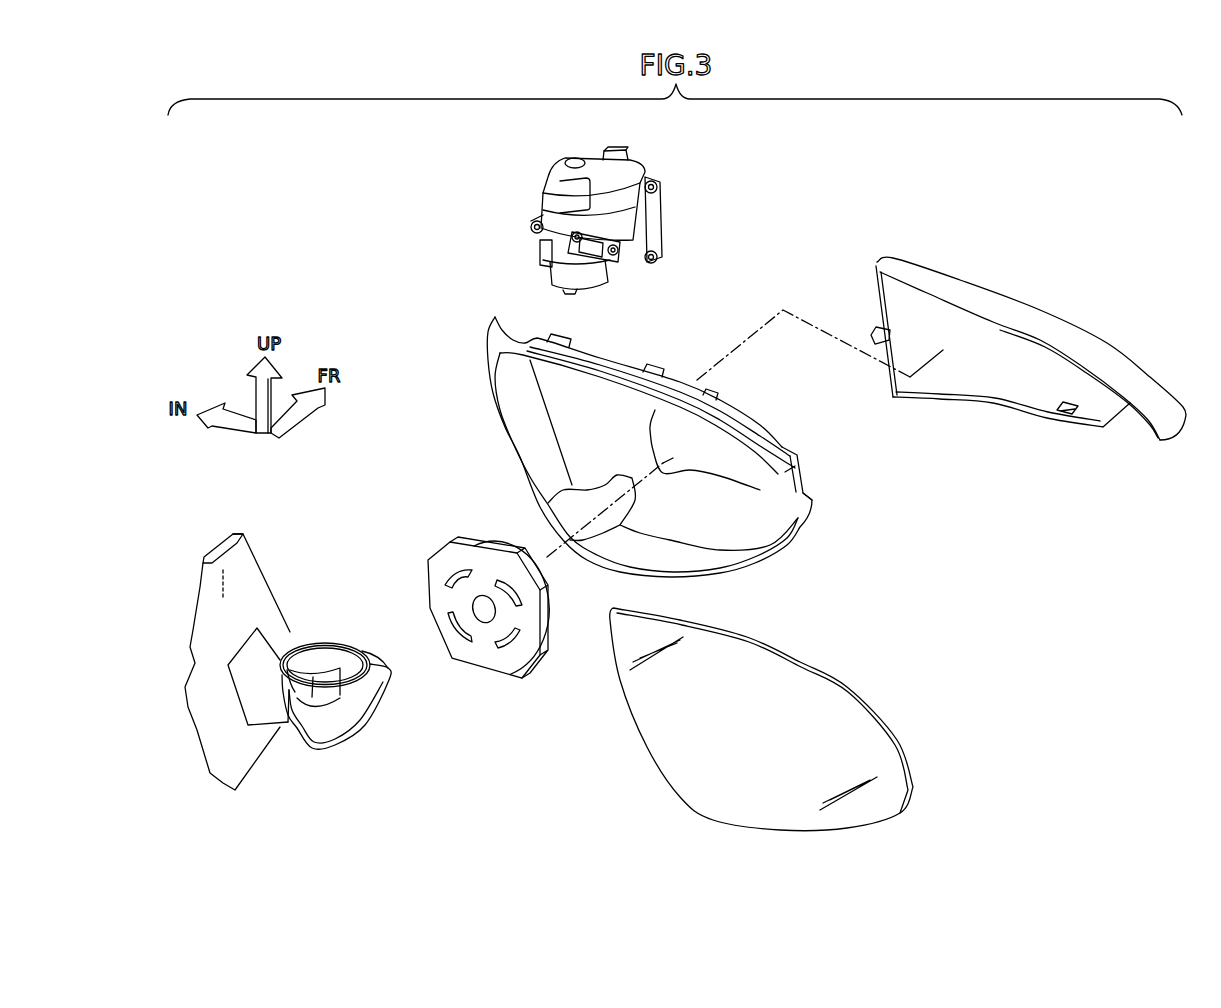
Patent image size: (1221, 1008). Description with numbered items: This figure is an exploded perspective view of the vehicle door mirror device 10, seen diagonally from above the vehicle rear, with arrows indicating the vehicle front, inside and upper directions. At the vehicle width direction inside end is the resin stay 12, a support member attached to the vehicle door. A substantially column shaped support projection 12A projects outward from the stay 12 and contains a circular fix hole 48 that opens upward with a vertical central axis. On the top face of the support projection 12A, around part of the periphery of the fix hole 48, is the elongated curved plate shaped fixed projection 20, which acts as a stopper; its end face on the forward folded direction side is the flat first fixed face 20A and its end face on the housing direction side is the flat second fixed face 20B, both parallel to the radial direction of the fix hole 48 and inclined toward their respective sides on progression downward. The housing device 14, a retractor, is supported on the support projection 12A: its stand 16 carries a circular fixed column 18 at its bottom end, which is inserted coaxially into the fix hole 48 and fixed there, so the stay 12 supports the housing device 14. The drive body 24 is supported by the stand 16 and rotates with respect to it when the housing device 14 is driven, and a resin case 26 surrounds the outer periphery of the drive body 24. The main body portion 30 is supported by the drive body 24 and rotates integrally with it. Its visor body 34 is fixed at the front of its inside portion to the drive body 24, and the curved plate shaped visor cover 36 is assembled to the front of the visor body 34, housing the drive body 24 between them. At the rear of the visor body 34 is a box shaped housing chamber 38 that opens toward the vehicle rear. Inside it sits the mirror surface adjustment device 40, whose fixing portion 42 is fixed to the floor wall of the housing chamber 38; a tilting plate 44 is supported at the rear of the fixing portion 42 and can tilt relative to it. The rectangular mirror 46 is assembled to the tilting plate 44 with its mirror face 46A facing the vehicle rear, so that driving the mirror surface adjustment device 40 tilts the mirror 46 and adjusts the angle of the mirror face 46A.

The vehicle door mirror device 10 is at (406, 262).
The stay 12 is at (308, 648).
The support projection 12A is at (323, 643).
The housing device 14 is at (566, 219).
The stand 16 is at (603, 289).
The fixed column 18 is at (547, 270).
The fixed projection 20 is at (329, 685).
The first fixed face 20A is at (356, 683).
The second fixed face 20B is at (279, 690).
The drive body 24 is at (556, 154).
The case 26 is at (546, 189).
The main body portion 30 is at (1028, 306).
The visor body 34 is at (815, 513).
The visor cover 36 is at (1066, 312).
The housing chamber 38 is at (710, 560).
The mirror surface adjustment device 40 is at (477, 606).
The fixing portion 42 is at (501, 543).
The tilting plate 44 is at (480, 667).
The mirror 46 is at (755, 719).
The mirror face 46A is at (677, 768).
The fix hole 48 is at (342, 645).